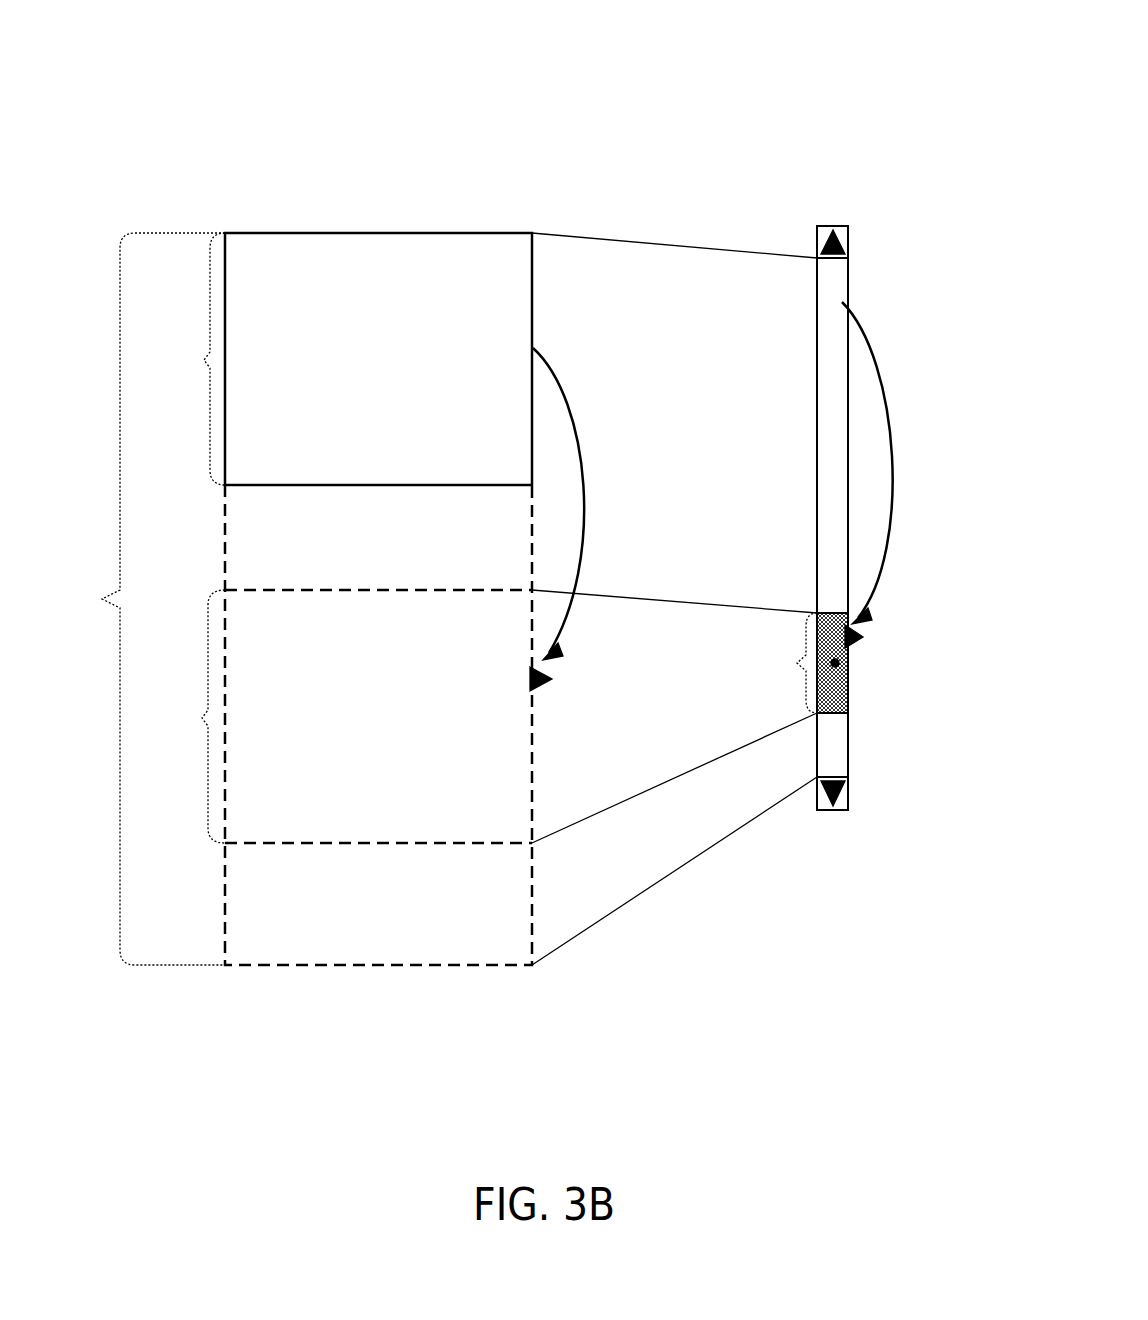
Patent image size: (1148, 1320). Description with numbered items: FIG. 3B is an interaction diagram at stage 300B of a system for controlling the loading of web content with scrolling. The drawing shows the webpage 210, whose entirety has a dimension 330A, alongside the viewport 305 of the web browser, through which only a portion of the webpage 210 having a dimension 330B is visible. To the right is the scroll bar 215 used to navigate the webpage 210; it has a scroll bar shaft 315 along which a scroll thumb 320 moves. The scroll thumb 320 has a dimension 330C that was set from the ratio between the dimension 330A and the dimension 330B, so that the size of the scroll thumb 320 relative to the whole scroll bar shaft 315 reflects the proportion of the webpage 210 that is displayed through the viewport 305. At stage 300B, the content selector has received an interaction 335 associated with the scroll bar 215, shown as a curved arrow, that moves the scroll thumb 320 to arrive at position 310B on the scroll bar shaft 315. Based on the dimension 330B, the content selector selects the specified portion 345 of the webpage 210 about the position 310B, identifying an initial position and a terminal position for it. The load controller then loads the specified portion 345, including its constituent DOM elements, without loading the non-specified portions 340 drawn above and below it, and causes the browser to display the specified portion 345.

The stage 300B is at (510, 48).
The webpage 210 is at (378, 740).
The viewport 305 is at (378, 359).
The non-specified portion 340 is at (378, 725).
The specified portion 345 is at (378, 716).
The dimension 330A is at (134, 599).
The dimension 330B is at (181, 538).
The dimension 330C is at (768, 663).
The scroll bar 215 is at (826, 216).
The position 310B is at (850, 663).
The scroll thumb 320 is at (864, 690).
The scroll bar shaft 315 is at (864, 763).
The interaction 335 is at (739, 496).